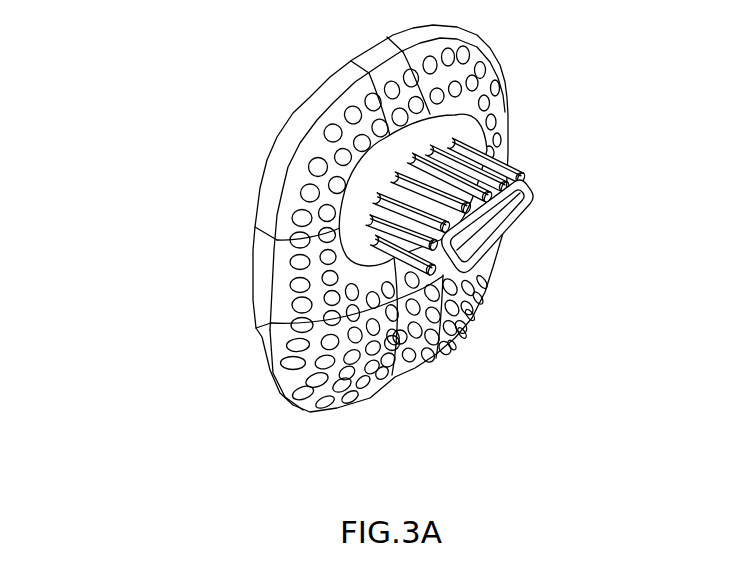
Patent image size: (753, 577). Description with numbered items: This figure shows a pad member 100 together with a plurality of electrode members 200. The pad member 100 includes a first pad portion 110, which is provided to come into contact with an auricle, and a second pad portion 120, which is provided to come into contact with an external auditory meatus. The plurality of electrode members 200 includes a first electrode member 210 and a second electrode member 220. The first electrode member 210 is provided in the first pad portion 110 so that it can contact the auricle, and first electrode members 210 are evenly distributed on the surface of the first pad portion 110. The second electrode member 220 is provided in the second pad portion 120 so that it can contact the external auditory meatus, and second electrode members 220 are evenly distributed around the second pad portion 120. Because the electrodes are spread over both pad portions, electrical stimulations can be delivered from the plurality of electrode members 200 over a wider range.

The pad member 100 is at (95, 255).
The first pad portion 110 is at (268, 272).
The second pad portion 120 is at (276, 316).
The plurality of electrode members 200 is at (521, 178).
The first electrode member 210 is at (505, 93).
The second electrode member 220 is at (508, 162).